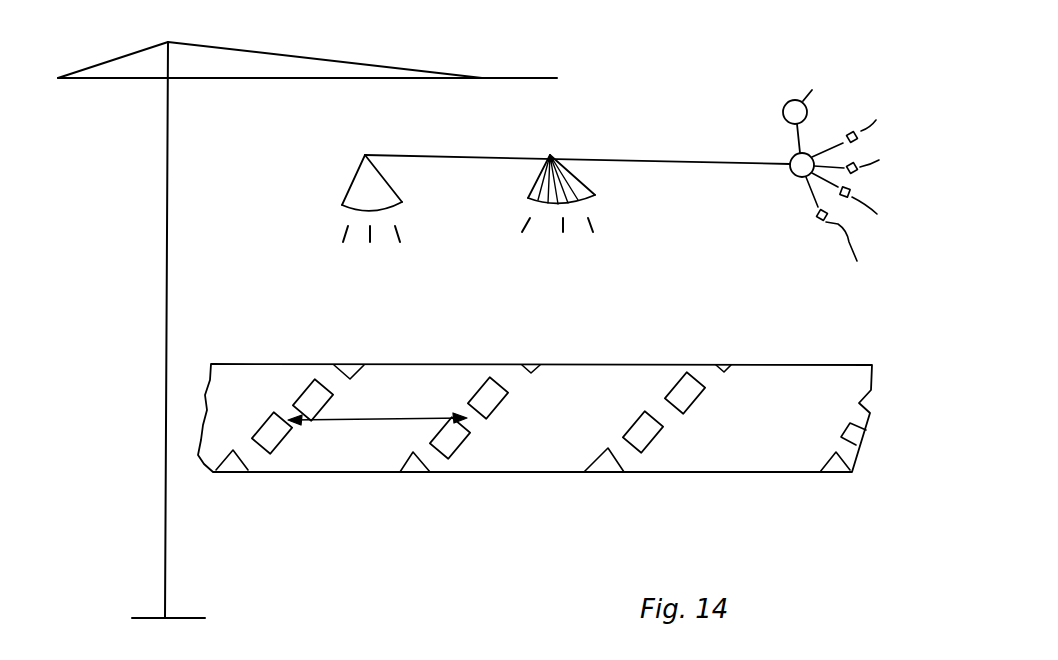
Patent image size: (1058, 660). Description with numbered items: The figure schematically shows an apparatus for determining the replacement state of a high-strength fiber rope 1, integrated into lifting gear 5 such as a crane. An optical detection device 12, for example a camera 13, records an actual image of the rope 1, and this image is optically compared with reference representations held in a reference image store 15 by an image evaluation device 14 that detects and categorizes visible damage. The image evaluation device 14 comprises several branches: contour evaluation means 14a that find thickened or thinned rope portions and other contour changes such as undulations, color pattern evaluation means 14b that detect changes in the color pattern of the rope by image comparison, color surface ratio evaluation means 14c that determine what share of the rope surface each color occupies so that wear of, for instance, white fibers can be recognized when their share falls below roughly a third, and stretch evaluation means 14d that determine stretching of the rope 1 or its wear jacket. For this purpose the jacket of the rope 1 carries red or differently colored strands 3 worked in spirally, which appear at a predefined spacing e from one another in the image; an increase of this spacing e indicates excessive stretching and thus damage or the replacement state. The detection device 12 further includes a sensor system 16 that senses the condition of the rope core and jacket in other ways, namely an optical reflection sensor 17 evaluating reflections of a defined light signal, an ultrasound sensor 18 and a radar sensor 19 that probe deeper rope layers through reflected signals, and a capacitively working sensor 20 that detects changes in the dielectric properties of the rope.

The high-strength fiber rope 1 is at (645, 362).
The strands 3 is at (470, 445).
The crane 5 is at (484, 105).
The spacing e is at (363, 419).
The optical detection device 12 is at (324, 209).
The camera 13 is at (345, 200).
The image evaluation device 14 is at (845, 174).
The contour evaluation means 14a is at (870, 133).
The color pattern evaluation means 14b is at (875, 165).
The color surface ratio evaluation means 14c is at (873, 201).
The stretch evaluation means 14d is at (792, 175).
The reference image store 15 is at (811, 111).
The sensor system 16 is at (572, 215).
The optical reflection sensor 17 is at (530, 191).
The ultrasound sensor 18 is at (556, 201).
The radar sensor 19 is at (566, 208).
The capacitively working sensor 20 is at (596, 199).